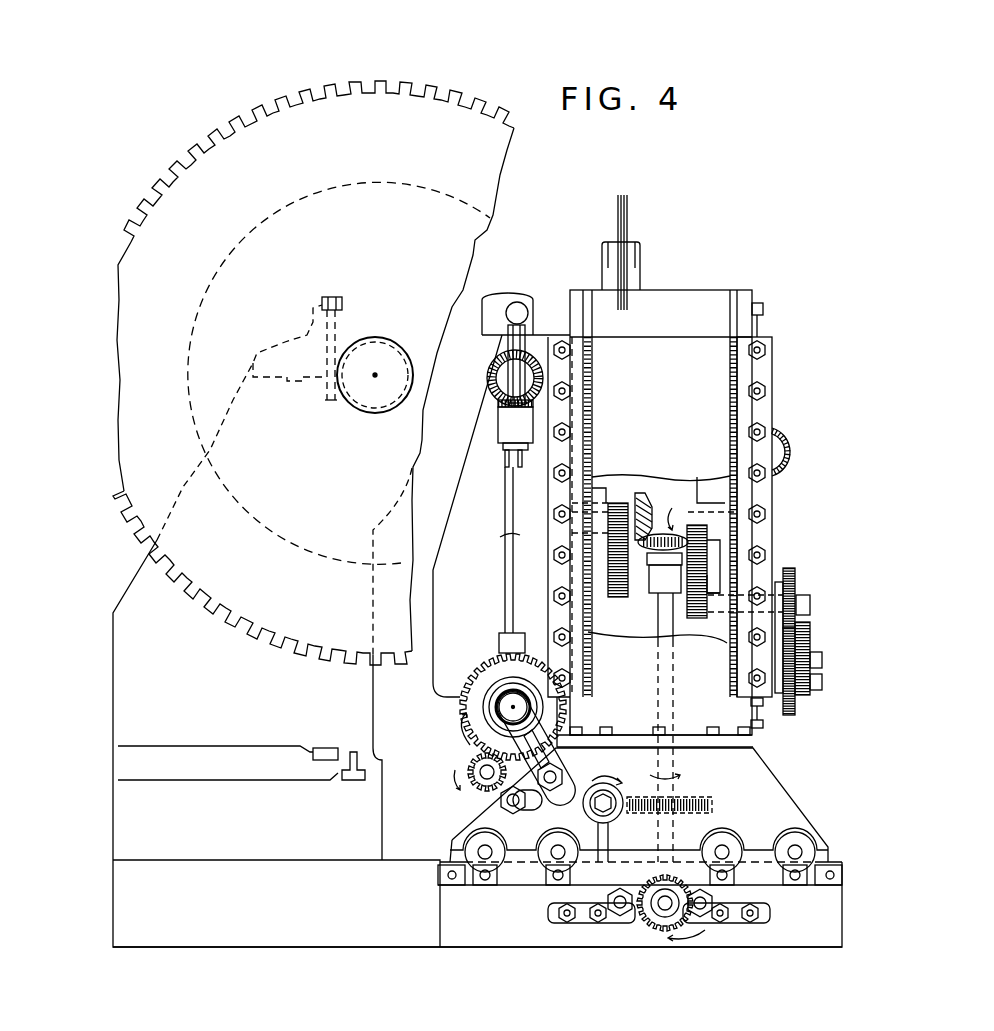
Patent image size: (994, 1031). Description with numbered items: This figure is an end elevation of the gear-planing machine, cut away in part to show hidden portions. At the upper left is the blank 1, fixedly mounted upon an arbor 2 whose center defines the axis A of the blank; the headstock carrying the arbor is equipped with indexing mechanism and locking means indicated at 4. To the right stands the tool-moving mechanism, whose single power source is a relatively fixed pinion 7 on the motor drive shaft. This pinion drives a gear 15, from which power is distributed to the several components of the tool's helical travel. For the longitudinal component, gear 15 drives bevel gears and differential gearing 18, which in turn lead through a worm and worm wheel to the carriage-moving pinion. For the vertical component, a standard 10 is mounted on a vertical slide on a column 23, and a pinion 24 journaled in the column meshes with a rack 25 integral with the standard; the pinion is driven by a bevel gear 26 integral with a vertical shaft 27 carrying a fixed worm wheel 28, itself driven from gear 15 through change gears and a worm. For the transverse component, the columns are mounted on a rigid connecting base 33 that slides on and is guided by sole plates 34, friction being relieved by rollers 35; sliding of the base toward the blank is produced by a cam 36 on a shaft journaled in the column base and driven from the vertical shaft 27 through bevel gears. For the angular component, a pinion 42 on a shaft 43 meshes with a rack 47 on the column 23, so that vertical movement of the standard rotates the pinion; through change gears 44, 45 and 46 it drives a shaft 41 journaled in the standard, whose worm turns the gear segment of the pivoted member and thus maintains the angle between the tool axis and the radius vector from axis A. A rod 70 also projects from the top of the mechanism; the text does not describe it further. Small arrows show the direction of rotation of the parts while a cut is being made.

The indexing mechanism and locking means 4 is at (332, 80).
The blank 1 is at (262, 220).
The arbor 2 is at (388, 338).
The axis of blank A is at (375, 375).
The rod 70 is at (628, 214).
The standard 10 is at (705, 290).
The differential gearing 18 is at (540, 370).
The column 23 is at (773, 376).
The pinion 24 is at (637, 492).
The rack 25 is at (615, 600).
The bevel gear 26 is at (672, 535).
The shaft 27 is at (660, 630).
The pinion 42 is at (688, 608).
The shaft 43 is at (717, 594).
The rack 47 is at (703, 573).
The change gear 44 is at (795, 587).
The change gear 45 is at (795, 706).
The change gear 46 is at (808, 643).
The shaft 41 is at (822, 659).
The gear 15 is at (458, 705).
The pinion 7 is at (470, 770).
The base 33 is at (770, 777).
The worm wheel 28 is at (702, 801).
The rollers 35 is at (560, 845).
The cam 36 is at (642, 925).
The sole plate 34 is at (328, 952).